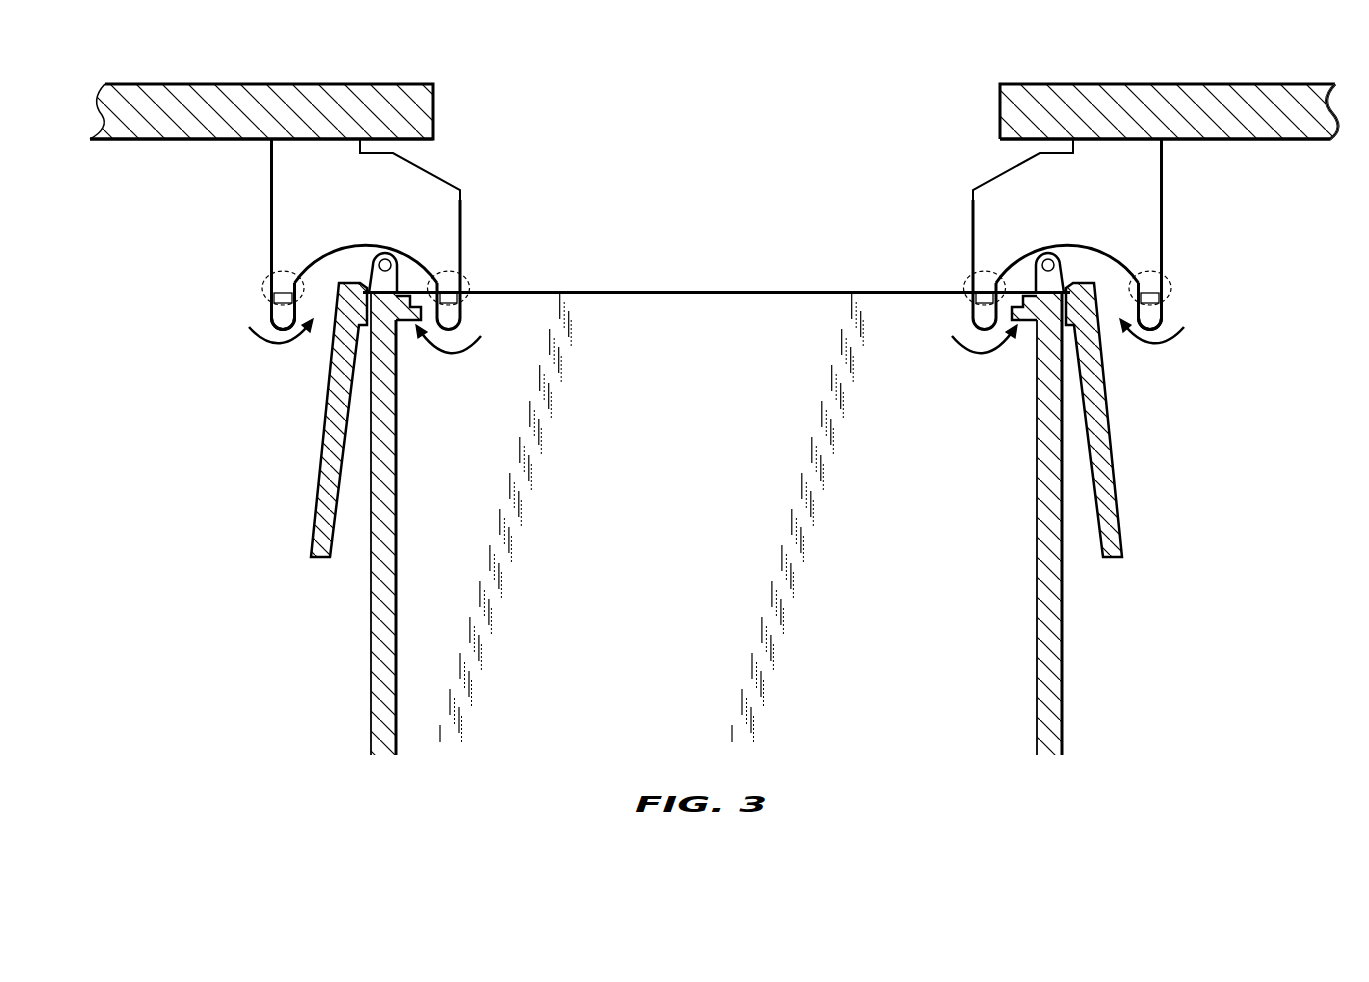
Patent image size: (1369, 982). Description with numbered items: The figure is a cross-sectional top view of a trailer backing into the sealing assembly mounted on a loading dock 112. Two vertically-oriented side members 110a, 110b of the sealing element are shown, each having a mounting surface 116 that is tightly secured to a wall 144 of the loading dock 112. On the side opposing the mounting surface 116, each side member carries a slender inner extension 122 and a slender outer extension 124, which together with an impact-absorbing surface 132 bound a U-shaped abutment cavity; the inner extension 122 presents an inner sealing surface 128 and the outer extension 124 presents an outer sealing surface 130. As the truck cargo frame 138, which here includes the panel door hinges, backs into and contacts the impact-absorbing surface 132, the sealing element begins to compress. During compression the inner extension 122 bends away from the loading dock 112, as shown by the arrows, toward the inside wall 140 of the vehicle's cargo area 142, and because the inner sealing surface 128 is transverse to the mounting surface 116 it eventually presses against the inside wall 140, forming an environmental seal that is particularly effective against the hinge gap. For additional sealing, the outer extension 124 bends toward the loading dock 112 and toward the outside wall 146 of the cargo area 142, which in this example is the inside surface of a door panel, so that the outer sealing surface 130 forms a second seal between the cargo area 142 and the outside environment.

The loading dock 112 is at (718, 120).
The wall 144 is at (174, 142).
The mounting surface 116 is at (313, 141).
The side member 110b is at (283, 198).
The side member 110a is at (1152, 198).
The impact-absorbing surface 132 is at (345, 258).
The outer sealing surface 130 is at (288, 284).
The outer extension 124 is at (272, 313).
The inner sealing surface 128 is at (440, 275).
The inner extension 122 is at (452, 311).
The truck cargo frame 138 is at (1036, 268).
The inside wall 140 is at (398, 502).
The outside wall 146 is at (320, 512).
The cargo area 142 is at (753, 504).